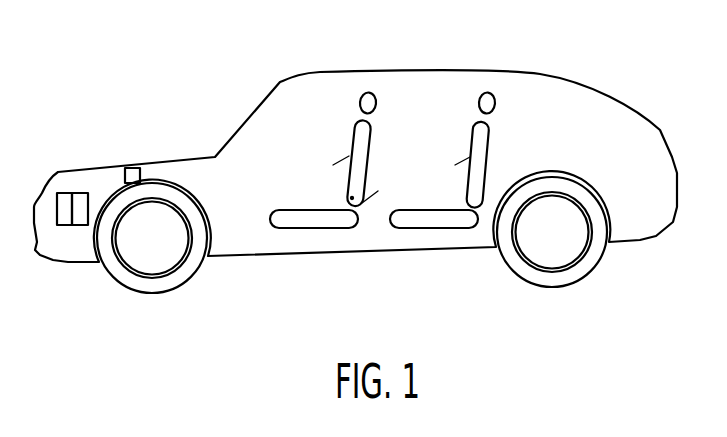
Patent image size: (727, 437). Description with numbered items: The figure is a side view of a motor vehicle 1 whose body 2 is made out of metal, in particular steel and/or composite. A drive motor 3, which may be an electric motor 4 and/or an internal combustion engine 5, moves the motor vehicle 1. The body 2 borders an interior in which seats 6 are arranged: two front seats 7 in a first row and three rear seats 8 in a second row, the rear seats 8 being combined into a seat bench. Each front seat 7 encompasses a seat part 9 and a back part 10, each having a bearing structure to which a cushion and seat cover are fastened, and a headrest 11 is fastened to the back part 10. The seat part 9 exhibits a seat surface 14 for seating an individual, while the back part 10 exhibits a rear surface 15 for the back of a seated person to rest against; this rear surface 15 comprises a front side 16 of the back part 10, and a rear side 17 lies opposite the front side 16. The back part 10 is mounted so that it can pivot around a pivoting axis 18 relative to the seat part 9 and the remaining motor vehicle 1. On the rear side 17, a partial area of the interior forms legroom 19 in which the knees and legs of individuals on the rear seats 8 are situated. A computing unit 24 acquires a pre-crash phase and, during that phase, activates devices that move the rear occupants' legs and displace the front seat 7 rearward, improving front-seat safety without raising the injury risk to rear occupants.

The motor vehicle 1 is at (636, 284).
The body 2 is at (627, 108).
The drive motor 3 is at (87, 171).
The electric motor 4 is at (65, 203).
The internal combustion engine 5 is at (83, 197).
The seats 6 is at (379, 60).
The front seat 7 is at (339, 103).
The rear seat 8 is at (458, 103).
The seat part 9 is at (290, 220).
The back part 10 is at (362, 138).
The headrest 11 is at (368, 92).
The seat surface 14 is at (393, 162).
The rear surface 15 is at (361, 136).
The front side 16 is at (348, 157).
The rear side 17 is at (368, 197).
The pivoting axis 18 is at (338, 204).
The legroom 19 is at (387, 180).
The computing unit 24 is at (133, 166).